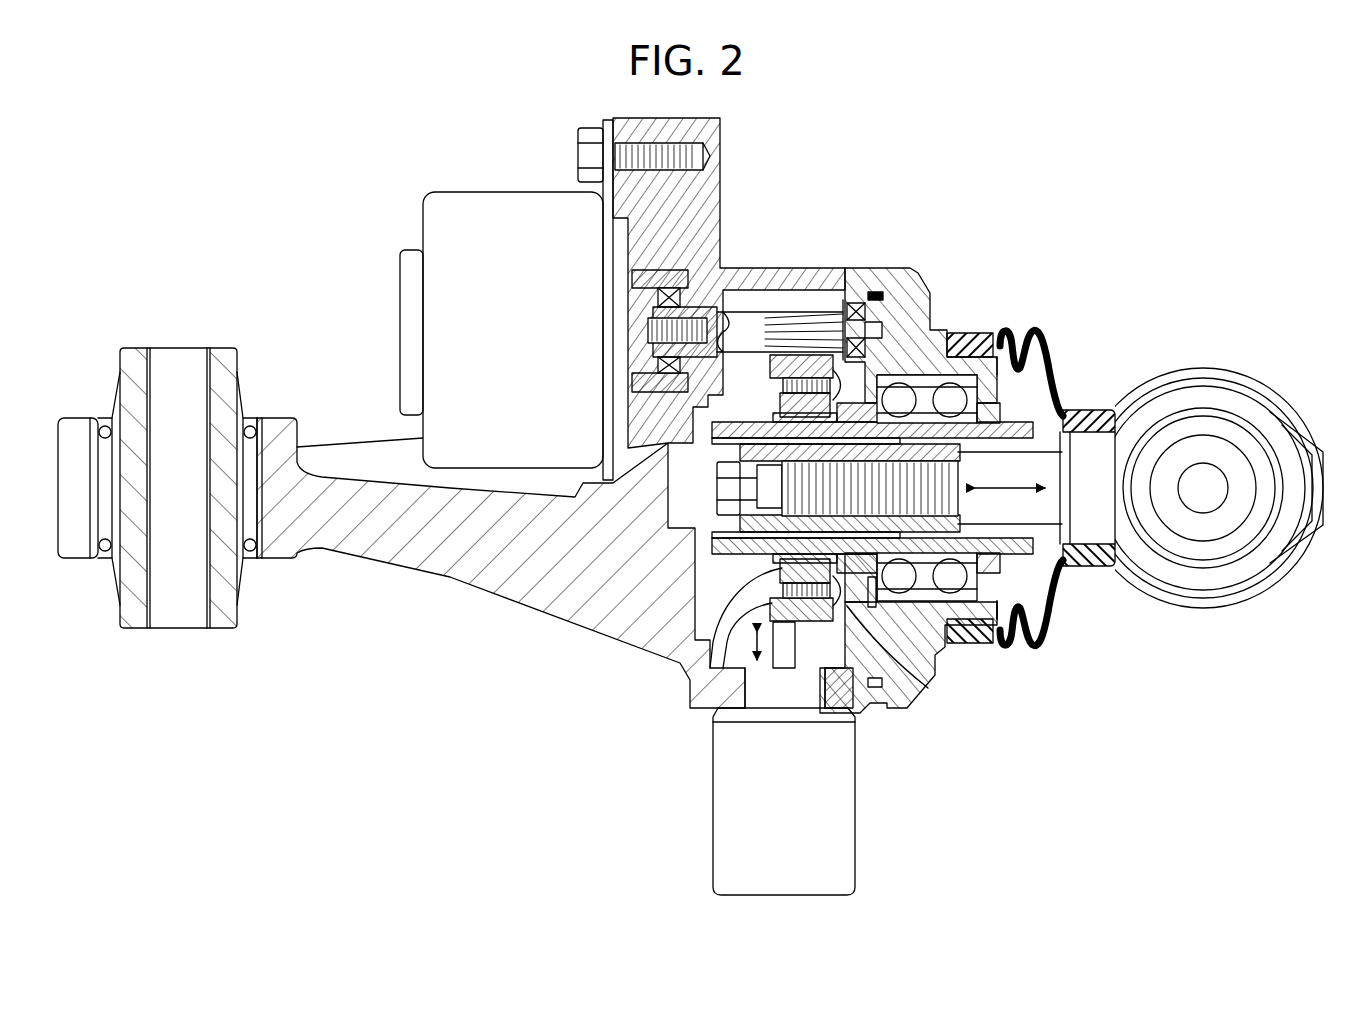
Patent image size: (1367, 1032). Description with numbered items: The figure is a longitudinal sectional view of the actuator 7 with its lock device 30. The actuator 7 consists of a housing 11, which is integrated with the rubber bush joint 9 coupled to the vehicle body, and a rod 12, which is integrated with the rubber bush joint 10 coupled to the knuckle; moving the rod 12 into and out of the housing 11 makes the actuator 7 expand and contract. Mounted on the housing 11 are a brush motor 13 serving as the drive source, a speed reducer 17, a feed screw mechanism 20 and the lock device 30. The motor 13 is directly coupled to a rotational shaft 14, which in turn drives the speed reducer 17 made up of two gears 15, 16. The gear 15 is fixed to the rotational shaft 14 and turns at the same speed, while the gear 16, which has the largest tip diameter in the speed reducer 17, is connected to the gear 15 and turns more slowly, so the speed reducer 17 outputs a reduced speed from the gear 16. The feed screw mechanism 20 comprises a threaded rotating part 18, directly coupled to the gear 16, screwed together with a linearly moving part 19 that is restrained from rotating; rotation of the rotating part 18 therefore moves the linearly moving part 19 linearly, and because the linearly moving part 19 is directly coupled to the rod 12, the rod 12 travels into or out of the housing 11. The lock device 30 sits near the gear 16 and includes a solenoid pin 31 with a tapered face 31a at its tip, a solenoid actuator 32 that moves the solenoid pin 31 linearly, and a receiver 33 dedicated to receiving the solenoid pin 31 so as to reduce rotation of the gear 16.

The actuator 7 is at (961, 167).
The rubber bush joint 9 is at (130, 608).
The rubber bush joint 10 is at (1205, 385).
The housing 11 is at (455, 570).
The rod 12 is at (1022, 468).
The motor 13 is at (508, 200).
The rotational shaft 14 is at (745, 330).
The gear 15 is at (797, 320).
The gear 16 is at (830, 350).
The speed reducer 17 is at (890, 207).
The rotating part 18 is at (858, 532).
The linearly moving part 19 is at (935, 645).
The feed screw mechanism 20 is at (1025, 762).
The lock device 30 is at (605, 672).
The solenoid pin 31 is at (760, 698).
The tapered face 31a is at (785, 650).
The actuator (solenoid) 32 is at (735, 812).
The receiver 33 is at (700, 672).